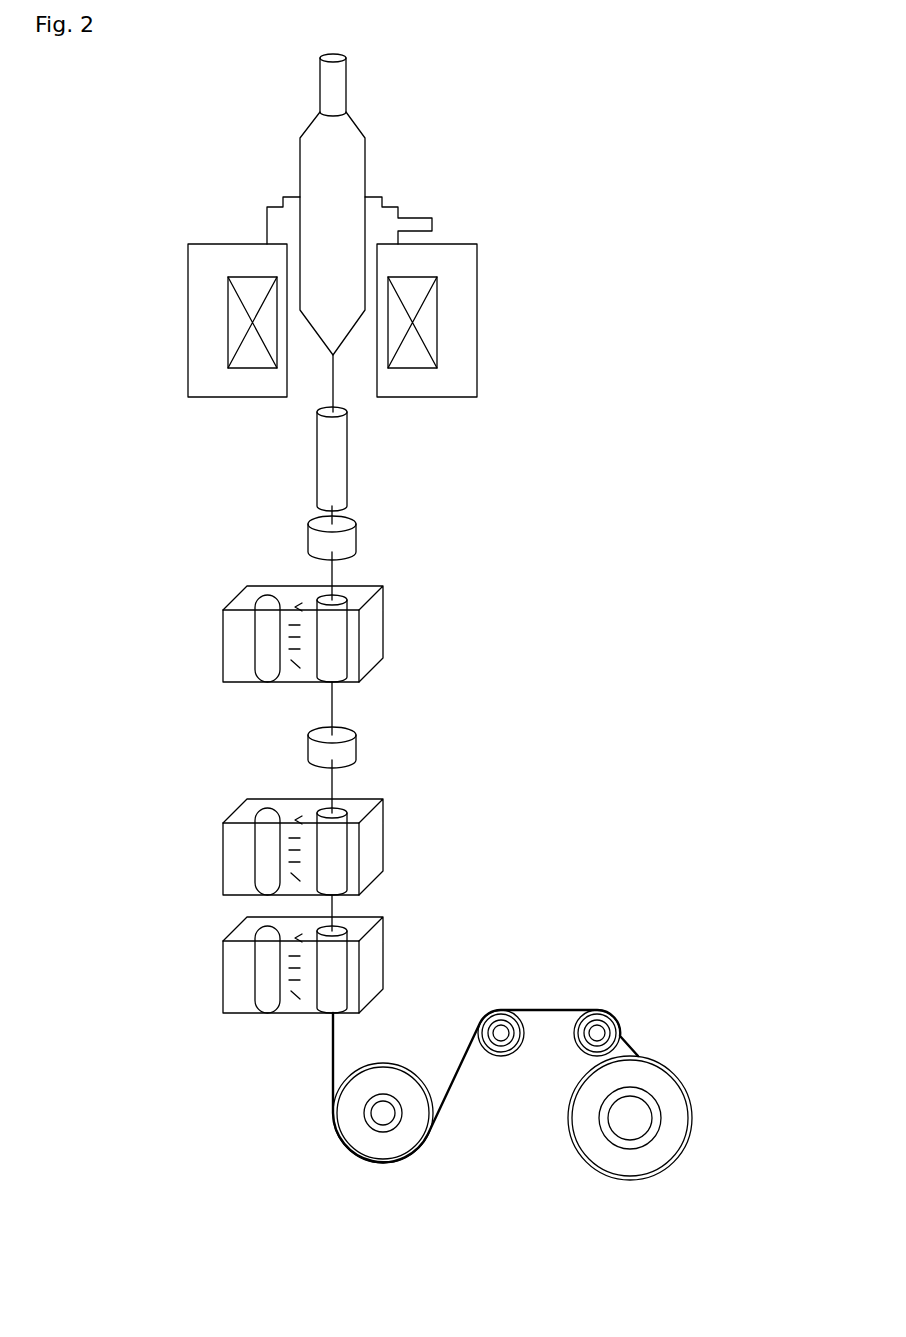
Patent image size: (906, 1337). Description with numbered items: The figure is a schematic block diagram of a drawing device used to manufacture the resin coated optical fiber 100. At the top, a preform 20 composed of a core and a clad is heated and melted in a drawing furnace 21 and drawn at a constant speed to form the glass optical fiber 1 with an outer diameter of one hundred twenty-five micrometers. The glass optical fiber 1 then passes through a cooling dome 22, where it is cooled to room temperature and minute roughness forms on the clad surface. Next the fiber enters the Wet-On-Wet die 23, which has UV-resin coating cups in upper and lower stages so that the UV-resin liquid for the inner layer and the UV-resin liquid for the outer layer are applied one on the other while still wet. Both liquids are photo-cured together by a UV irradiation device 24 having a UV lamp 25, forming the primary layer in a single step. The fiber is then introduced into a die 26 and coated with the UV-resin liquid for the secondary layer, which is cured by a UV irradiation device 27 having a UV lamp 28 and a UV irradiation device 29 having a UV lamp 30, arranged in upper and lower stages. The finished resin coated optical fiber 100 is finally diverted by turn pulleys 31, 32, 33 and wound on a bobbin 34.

The glass optical fiber 1 is at (325, 396).
The preform 20 is at (360, 132).
The drawing furnace 21 is at (453, 327).
The cooling dome 22 is at (347, 450).
The Wet-On-Wet die 23 is at (352, 522).
The UV irradiation device 24 is at (372, 623).
The UV lamp 25 is at (268, 640).
The die 26 is at (355, 735).
The UV irradiation device 27 is at (372, 835).
The UV lamp 28 is at (268, 850).
The UV irradiation device 29 is at (372, 952).
The UV lamp 30 is at (268, 968).
The turn pulley 31 is at (338, 1142).
The turn pulley 32 is at (517, 1010).
The turn pulley 33 is at (617, 1017).
The bobbin 34 is at (682, 1087).
The resin coated optical fiber 100 is at (328, 1045).